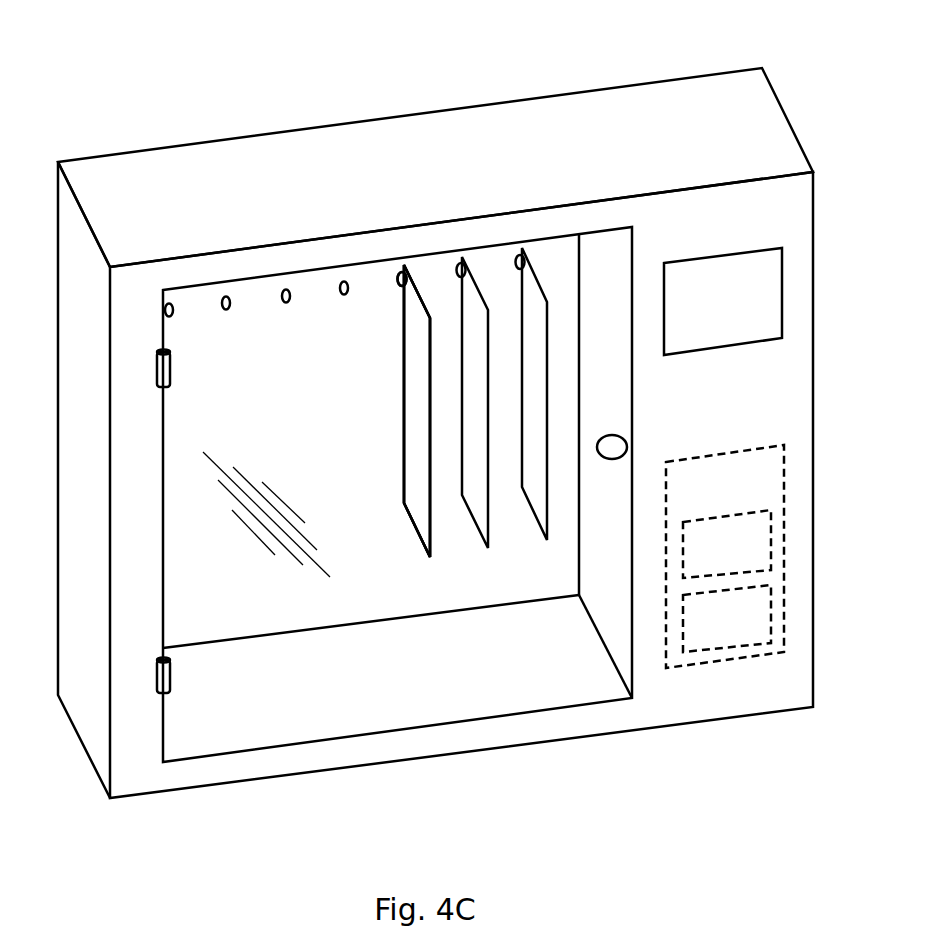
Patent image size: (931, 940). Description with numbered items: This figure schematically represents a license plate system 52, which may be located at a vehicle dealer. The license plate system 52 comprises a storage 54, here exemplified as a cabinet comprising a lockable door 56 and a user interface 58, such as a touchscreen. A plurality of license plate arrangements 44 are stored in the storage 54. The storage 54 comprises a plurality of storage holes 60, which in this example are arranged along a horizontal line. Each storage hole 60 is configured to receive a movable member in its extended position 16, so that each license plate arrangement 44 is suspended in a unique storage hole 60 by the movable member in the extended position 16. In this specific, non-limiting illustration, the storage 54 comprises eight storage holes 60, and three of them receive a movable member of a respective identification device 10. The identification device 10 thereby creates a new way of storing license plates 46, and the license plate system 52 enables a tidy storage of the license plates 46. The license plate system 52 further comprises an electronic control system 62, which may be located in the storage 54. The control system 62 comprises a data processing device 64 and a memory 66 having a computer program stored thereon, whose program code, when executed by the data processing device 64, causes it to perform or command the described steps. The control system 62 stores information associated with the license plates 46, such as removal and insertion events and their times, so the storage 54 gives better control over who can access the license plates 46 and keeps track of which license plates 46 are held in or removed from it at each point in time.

The license plate system 52 is at (173, 68).
The storage 54 is at (428, 143).
The lockable door 56 is at (608, 383).
The user interface 58 is at (709, 315).
The storage holes 60 is at (225, 312).
The electronic control system 62 is at (710, 505).
The data processing device 64 is at (727, 544).
The memory 66 is at (710, 633).
The identification device 10 is at (398, 284).
The extended position 16 is at (367, 340).
The license plate arrangements 44 is at (377, 442).
The license plates 46 is at (415, 403).